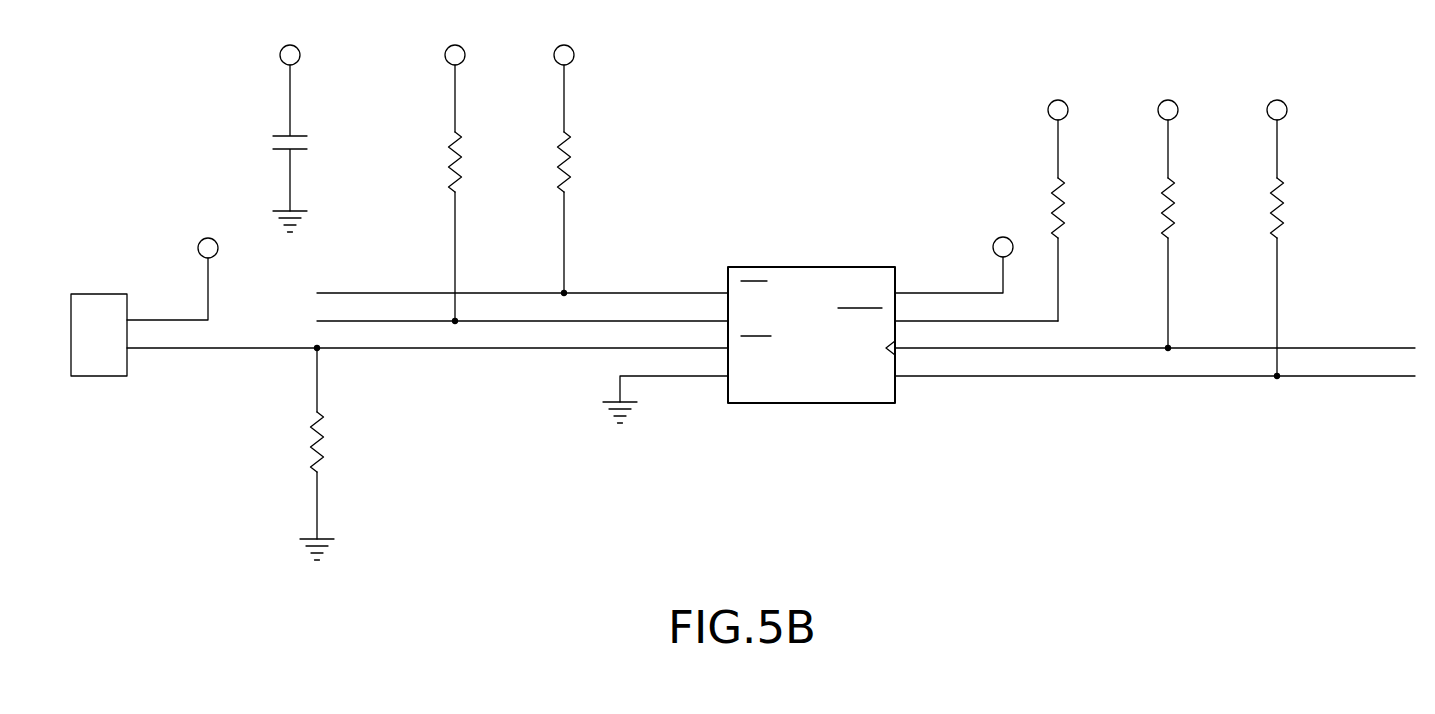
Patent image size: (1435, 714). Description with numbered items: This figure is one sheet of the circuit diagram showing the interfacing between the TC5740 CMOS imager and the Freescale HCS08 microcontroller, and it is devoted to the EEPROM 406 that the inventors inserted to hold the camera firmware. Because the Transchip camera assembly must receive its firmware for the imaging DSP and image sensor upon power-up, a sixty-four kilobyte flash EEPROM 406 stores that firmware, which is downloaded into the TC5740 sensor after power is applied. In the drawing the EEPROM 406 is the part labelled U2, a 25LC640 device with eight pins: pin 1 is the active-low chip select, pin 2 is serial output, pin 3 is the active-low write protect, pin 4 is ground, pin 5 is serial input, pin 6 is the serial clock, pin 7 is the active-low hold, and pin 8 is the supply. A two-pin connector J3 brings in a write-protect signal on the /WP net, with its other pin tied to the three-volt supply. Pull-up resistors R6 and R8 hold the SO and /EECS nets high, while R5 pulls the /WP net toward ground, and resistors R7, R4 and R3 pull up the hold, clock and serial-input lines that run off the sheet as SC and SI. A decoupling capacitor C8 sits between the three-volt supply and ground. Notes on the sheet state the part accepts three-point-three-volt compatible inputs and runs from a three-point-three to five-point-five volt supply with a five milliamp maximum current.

The flash EEPROM 406 is at (743, 302).
The EEPROM 25LC640 U2 is at (811, 276).
The connector CON2 J3 is at (146, 309).
The capacitor 100nF C8 is at (319, 127).
The resistor 4K75 R3 is at (1297, 228).
The resistor 4K75 R4 is at (1188, 214).
The resistor 4K75 R5 is at (335, 454).
The resistor 4K75 R6 is at (474, 173).
The resistor 4K75 R7 is at (1078, 199).
The resistor 4K75 R8 is at (583, 159).
The U2 pin 1 CS net /EECS 1 is at (522, 283).
The U2 pin 2 SO net 2 is at (522, 311).
The U2 pin 3 WP net /WP 3 is at (427, 339).
The U2 pin 4 GND net 4 is at (665, 389).
The U2 pin 5 SI net 5 is at (1155, 365).
The U2 pin 6 SCK net SC 6 is at (1150, 341).
The U2 pin 7 HOLD net 7 is at (976, 312).
The U2 pin 8 VCC net 8 is at (956, 254).